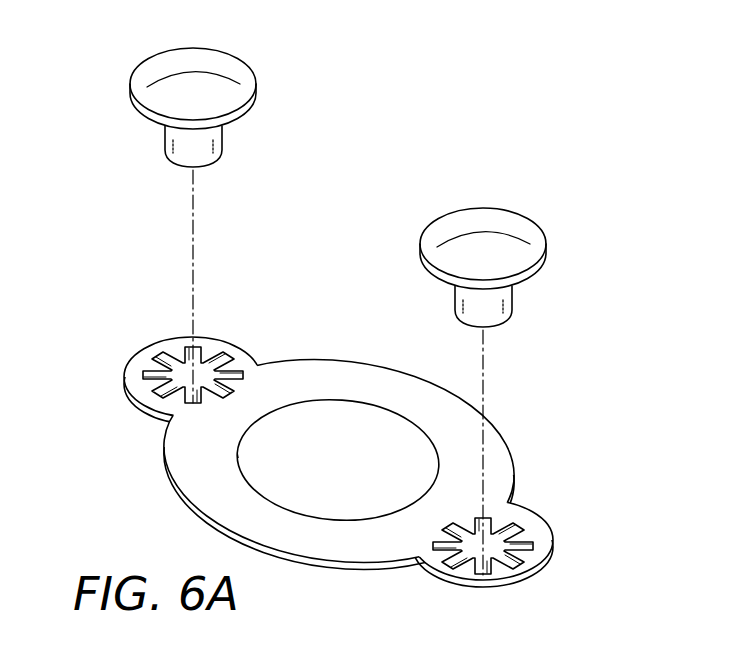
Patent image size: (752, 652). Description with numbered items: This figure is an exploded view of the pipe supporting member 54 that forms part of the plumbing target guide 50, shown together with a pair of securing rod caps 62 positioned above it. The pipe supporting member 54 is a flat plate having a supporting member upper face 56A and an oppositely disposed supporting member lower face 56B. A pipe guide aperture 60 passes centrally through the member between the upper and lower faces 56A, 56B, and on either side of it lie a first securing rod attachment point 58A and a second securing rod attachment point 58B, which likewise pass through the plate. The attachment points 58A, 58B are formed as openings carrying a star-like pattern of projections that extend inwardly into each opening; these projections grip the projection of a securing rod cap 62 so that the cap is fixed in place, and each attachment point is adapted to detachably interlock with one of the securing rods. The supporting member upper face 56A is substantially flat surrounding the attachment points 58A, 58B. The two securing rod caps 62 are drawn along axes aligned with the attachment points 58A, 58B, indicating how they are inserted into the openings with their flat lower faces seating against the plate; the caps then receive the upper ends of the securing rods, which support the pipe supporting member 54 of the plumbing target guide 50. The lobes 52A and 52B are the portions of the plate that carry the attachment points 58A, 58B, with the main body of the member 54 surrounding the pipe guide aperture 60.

The plumbing target guide 50 is at (558, 451).
The first mounting lobe 52A is at (146, 342).
The second mounting lobe 52B is at (548, 566).
The pipe supporting member 54 is at (508, 427).
The supporting member upper face 56A is at (297, 380).
The supporting member lower face 56B is at (290, 572).
The first securing rod attachment point 58A is at (160, 385).
The second securing rod attachment point 58B is at (467, 563).
The pipe guide aperture 60 is at (345, 420).
The securing rod cap 62 is at (150, 74).